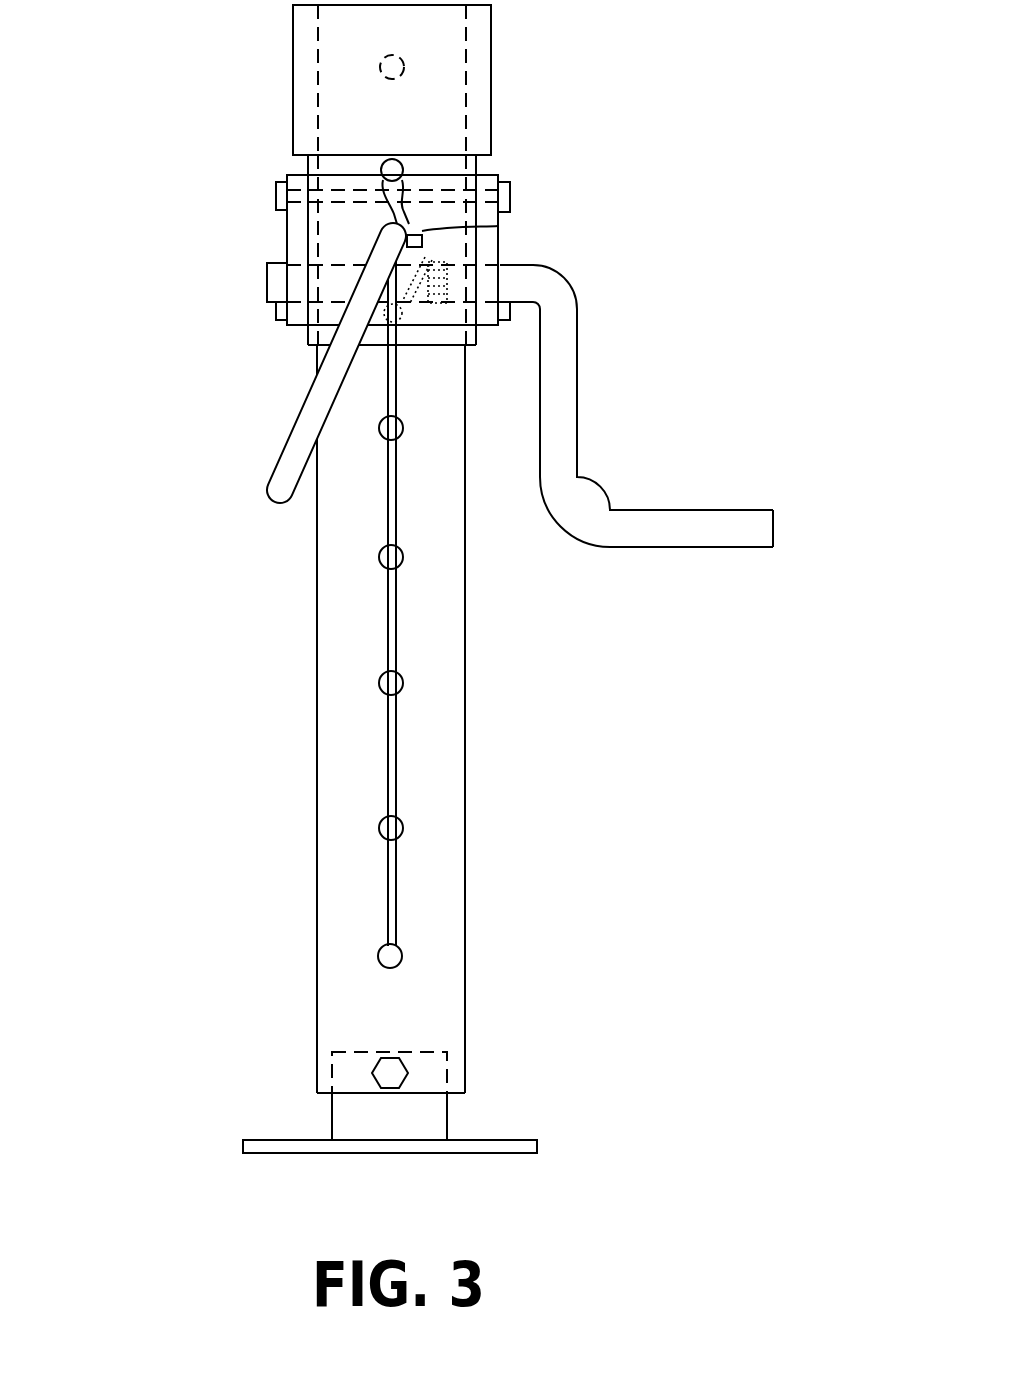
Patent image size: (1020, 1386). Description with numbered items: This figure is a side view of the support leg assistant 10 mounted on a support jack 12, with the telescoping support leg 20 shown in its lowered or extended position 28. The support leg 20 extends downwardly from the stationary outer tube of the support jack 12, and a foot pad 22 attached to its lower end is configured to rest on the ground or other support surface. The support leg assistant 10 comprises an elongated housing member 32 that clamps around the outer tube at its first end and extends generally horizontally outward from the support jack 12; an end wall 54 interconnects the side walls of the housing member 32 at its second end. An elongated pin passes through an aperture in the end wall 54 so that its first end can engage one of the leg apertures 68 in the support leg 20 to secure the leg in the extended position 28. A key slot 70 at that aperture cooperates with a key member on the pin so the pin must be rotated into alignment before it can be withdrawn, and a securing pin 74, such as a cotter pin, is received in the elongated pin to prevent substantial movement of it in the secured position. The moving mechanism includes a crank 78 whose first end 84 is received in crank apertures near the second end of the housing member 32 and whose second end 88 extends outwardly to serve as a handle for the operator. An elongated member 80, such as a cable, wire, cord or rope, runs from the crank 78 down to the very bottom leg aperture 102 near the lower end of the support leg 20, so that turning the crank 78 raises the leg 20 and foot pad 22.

The support leg assistant 10 is at (443, 626).
The support jack 12 is at (272, 68).
The support leg 20 is at (345, 838).
The foot pad 22 is at (273, 1148).
The extended position 28 is at (228, 593).
The housing member 32 is at (317, 388).
The end wall 54 is at (337, 220).
The leg apertures 68 is at (378, 686).
The key slot 70 is at (425, 236).
The securing pin 74 is at (403, 165).
The crank 78 is at (557, 437).
The elongated member 80 is at (395, 880).
The first end 84 is at (246, 275).
The second end 88 is at (769, 582).
The bottom leg aperture 102 is at (380, 967).